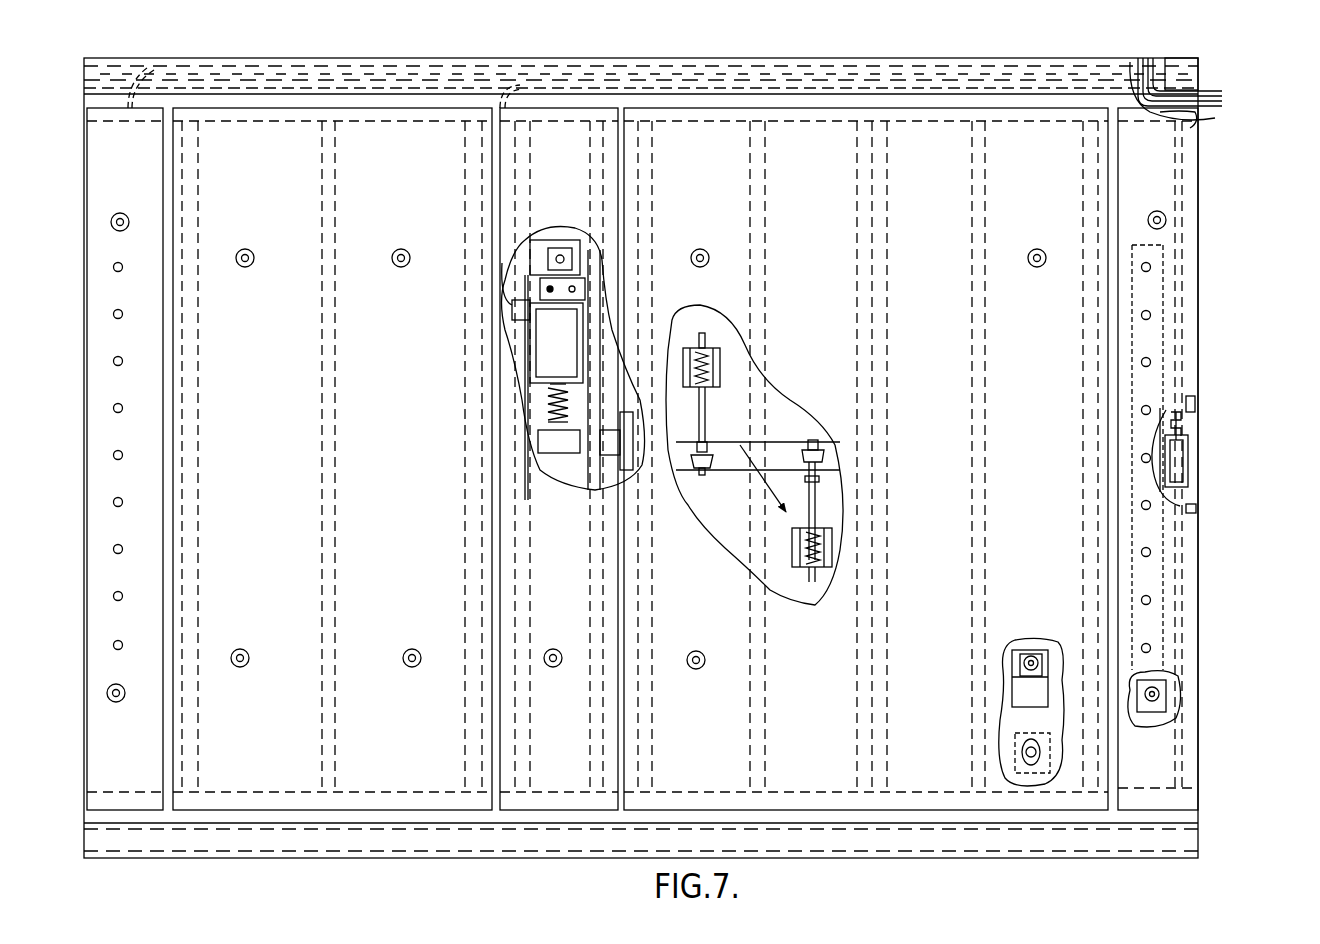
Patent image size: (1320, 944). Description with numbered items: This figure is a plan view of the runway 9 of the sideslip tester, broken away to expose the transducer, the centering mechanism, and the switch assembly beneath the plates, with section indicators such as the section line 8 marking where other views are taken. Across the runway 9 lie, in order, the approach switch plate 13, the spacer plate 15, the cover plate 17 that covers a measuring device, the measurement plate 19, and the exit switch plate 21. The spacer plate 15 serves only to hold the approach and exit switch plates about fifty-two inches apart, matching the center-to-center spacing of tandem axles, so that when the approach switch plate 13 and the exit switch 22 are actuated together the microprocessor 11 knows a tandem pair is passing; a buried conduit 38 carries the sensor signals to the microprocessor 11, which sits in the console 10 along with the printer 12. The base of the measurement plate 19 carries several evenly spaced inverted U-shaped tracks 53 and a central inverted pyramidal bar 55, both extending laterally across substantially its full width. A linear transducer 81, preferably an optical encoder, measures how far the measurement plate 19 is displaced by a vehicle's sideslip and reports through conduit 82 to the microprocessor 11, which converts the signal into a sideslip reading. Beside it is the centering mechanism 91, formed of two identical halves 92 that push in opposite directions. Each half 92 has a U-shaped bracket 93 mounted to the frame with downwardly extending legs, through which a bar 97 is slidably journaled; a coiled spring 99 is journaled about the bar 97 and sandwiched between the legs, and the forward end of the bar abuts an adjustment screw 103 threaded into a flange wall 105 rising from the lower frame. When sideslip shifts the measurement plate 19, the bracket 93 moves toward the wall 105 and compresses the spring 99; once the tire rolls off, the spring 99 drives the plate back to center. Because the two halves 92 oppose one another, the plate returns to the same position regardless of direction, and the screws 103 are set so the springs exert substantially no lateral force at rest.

The approach switch plate 13 is at (140, 761).
The spacer plate 15 is at (279, 761).
The cover plate 17 is at (563, 761).
The measurement plate 19 is at (711, 761).
The exit switch plate 21 is at (1163, 769).
The exit switch 22 is at (1192, 472).
The conduit 38 is at (1222, 92).
The conduit 82 is at (1222, 100).
The linear transducer 81 is at (538, 412).
The centering mechanism 91 is at (717, 394).
The half of centering mechanism 92 is at (724, 372).
The U-shaped bracket 93 is at (803, 570).
The bar 97 is at (816, 492).
The coiled spring 99 is at (826, 572).
The adjustment screw 103 is at (754, 455).
The wall 105 is at (822, 458).
The inverted U-shaped track 53 is at (656, 712).
The pyramidal bar 55 is at (884, 580).
The section line 8- 8 is at (855, 790).
The runway 9 is at (1017, 523).
The console 10 is at (1128, 553).
The microprocessor 11 is at (676, 527).
The printer 12 is at (500, 273).